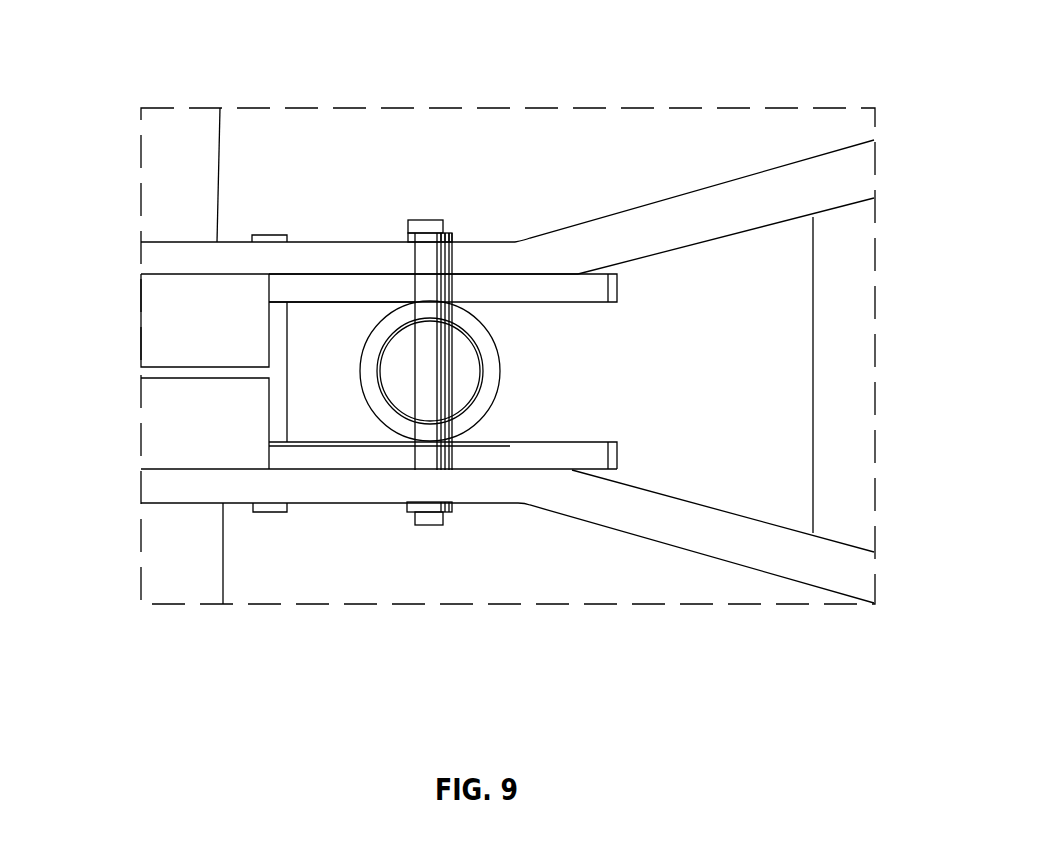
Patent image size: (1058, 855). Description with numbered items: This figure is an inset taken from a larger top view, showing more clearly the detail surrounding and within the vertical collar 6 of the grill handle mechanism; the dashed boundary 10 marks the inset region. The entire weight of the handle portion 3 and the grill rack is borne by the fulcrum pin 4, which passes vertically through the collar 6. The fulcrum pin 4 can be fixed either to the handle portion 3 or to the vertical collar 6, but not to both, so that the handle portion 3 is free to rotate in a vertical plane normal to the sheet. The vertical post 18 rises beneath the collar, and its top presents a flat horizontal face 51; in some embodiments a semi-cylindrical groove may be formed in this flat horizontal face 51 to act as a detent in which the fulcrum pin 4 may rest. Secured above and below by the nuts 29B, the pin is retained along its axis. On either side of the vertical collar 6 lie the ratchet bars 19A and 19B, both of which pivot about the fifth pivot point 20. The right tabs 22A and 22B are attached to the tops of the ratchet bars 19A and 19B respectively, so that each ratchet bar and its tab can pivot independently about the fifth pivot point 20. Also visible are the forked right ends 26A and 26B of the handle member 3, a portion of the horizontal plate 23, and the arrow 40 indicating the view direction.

The handle portion 3 is at (178, 222).
The fulcrum pin 4 is at (422, 290).
The vertical collar 6 is at (487, 375).
The robotic vehicle 10 is at (658, 108).
The vertical post 18 is at (380, 365).
The ratchet bar 19A is at (342, 460).
The ratchet bar 19B is at (312, 288).
The fifth pivot point 20 is at (283, 418).
The right tab 22A is at (205, 423).
The right tab 22B is at (205, 320).
The horizontal plate 23 is at (571, 365).
The forked right end 26A is at (685, 530).
The forked right end 26B is at (747, 203).
The nut 29B is at (430, 225).
The direction of wheel 40 is at (537, 362).
The flat horizontal face 51 is at (400, 368).